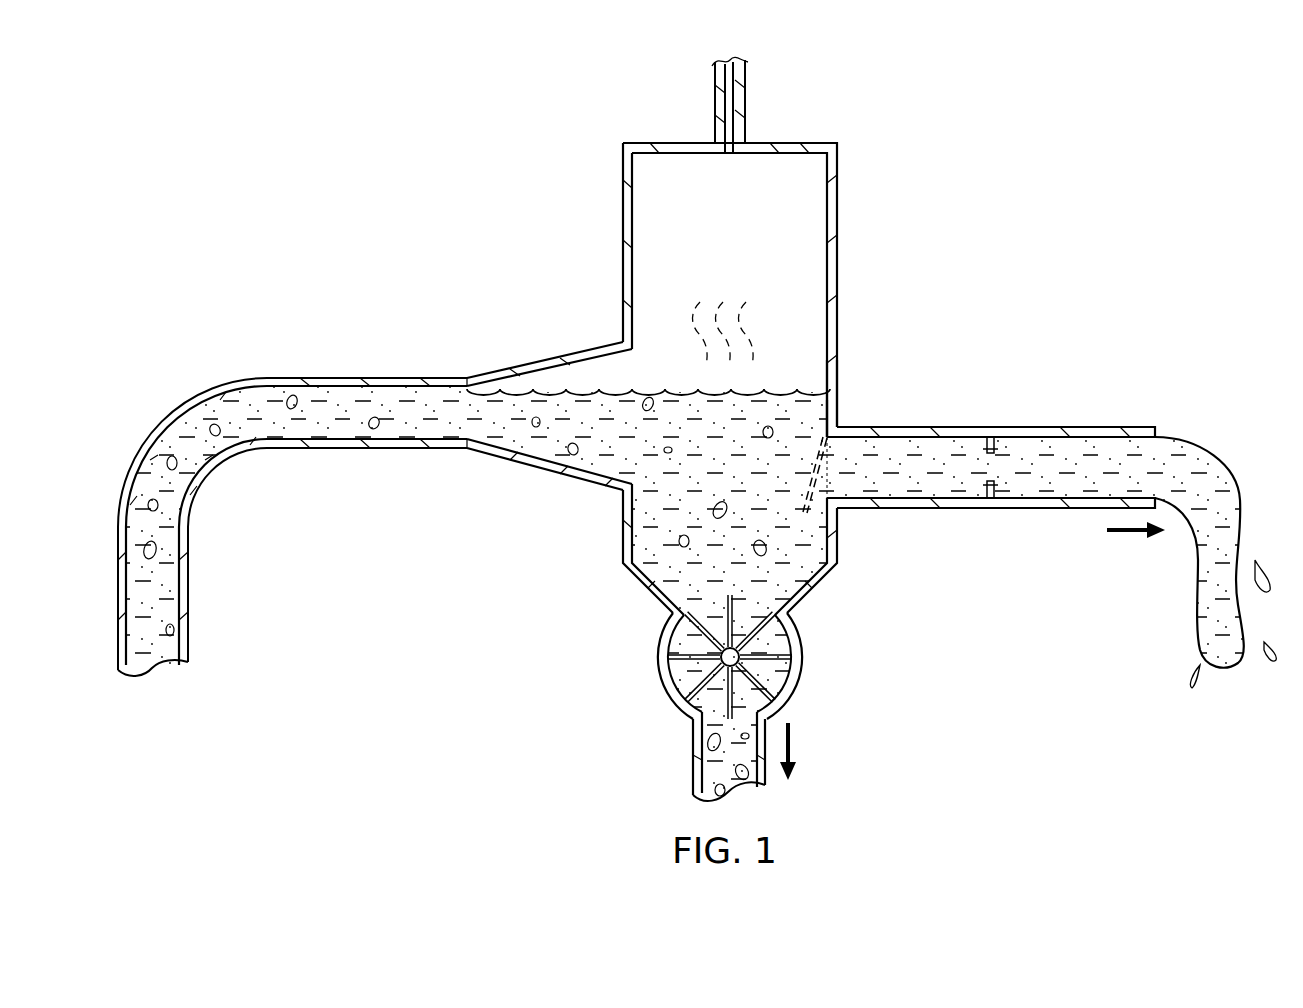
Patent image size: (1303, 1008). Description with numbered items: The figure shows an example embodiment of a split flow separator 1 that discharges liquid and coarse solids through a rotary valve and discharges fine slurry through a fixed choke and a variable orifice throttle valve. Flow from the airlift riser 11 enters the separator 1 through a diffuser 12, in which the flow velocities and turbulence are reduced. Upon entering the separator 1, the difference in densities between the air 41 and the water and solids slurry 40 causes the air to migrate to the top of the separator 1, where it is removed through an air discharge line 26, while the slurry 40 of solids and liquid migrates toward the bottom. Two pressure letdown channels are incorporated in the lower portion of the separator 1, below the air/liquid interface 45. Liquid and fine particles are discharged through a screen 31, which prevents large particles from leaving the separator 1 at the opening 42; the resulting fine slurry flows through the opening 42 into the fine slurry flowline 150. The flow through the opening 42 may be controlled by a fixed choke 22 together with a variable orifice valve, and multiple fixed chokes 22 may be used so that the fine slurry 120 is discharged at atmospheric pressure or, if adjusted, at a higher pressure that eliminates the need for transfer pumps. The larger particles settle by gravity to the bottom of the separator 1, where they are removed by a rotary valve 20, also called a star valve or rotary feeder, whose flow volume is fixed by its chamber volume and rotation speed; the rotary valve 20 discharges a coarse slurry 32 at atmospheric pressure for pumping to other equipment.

The separator 1 is at (623, 214).
The airlift riser 11 is at (114, 640).
The diffuser 12 is at (533, 362).
The rotary valve 20 is at (656, 676).
The fixed choke 22 is at (1012, 445).
The air discharge line 26 is at (715, 104).
The screen 31 is at (812, 468).
The coarse slurry 32 is at (792, 745).
The water and solids slurry 40 is at (818, 410).
The air 41 is at (820, 378).
The opening 42 is at (828, 479).
The air/liquid interface 45 is at (780, 391).
The fine slurry 120 is at (1222, 462).
The fine slurry flowline 150 is at (977, 508).